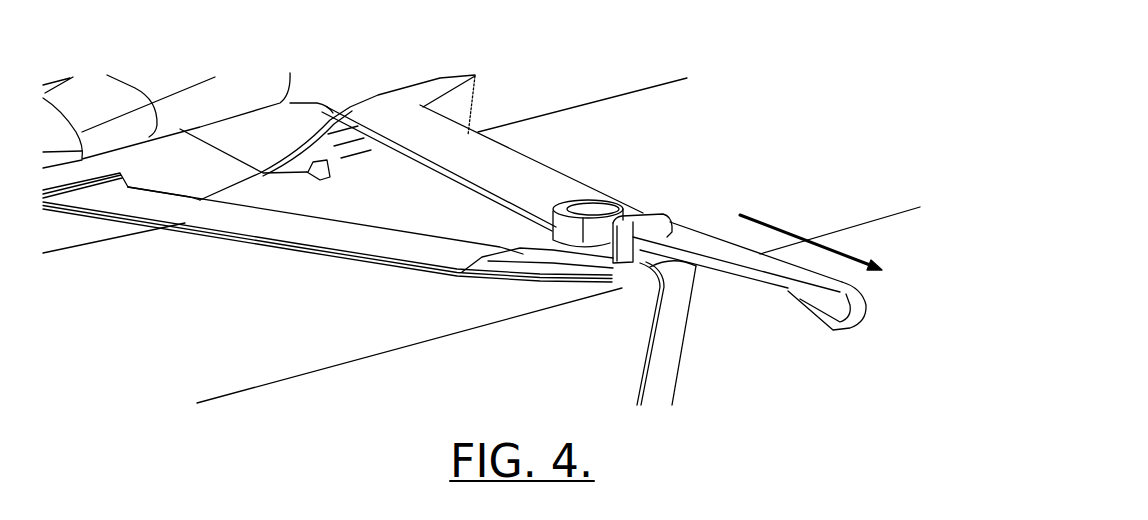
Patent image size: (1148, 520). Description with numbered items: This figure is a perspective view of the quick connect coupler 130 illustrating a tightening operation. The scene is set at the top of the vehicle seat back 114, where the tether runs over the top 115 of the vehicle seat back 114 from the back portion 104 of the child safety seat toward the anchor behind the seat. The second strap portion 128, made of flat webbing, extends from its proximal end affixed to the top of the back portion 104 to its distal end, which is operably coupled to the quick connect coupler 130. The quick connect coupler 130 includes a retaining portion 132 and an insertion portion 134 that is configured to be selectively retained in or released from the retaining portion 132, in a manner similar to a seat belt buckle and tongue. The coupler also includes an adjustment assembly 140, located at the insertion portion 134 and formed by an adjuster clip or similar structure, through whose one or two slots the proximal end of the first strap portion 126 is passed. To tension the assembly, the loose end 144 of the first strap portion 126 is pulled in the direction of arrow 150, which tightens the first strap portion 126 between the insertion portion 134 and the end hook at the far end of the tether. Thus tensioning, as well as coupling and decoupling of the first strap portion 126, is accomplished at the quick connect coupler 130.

The back portion 104 is at (352, 100).
The vehicle seat back 114 is at (345, 402).
The top 115 is at (673, 107).
The first strap portion 126 is at (673, 360).
The second strap portion 128 is at (468, 143).
The quick connect coupler 130 is at (695, 258).
The retaining portion 132 is at (600, 203).
The insertion portion 134 is at (668, 213).
The adjustment assembly 140 is at (630, 268).
The loose end 144 is at (788, 293).
The arrow 150 is at (847, 247).